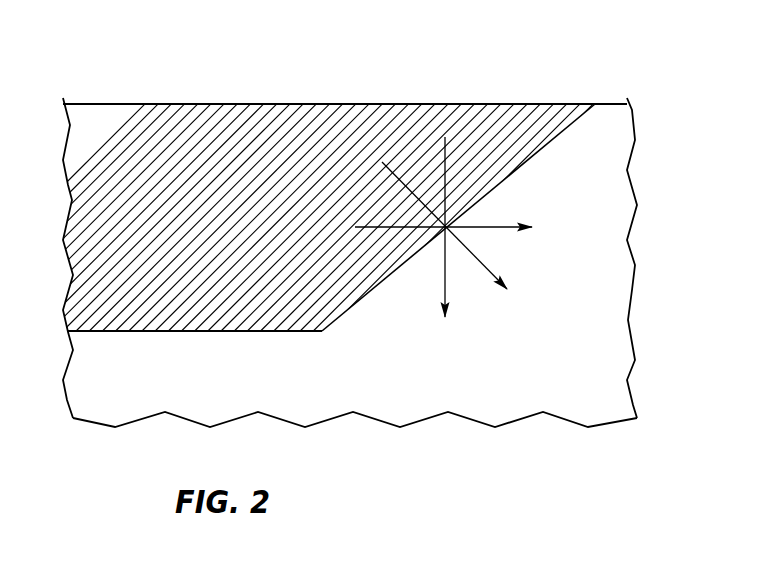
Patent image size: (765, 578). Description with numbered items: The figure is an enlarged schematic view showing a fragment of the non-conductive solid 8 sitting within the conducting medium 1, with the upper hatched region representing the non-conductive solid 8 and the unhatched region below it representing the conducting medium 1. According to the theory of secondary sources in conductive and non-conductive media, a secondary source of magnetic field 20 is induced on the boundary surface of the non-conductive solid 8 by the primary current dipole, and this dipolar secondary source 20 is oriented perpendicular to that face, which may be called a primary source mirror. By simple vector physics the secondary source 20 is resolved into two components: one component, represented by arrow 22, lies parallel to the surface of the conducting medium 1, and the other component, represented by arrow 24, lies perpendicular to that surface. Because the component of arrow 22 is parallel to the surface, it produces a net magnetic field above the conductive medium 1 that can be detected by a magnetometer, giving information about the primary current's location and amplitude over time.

The conducting medium 1 is at (515, 408).
The non-conductive solid 8 is at (222, 117).
The secondary source 20 is at (490, 260).
The parallel component arrow 22 is at (501, 225).
The perpendicular component arrow 24 is at (452, 290).